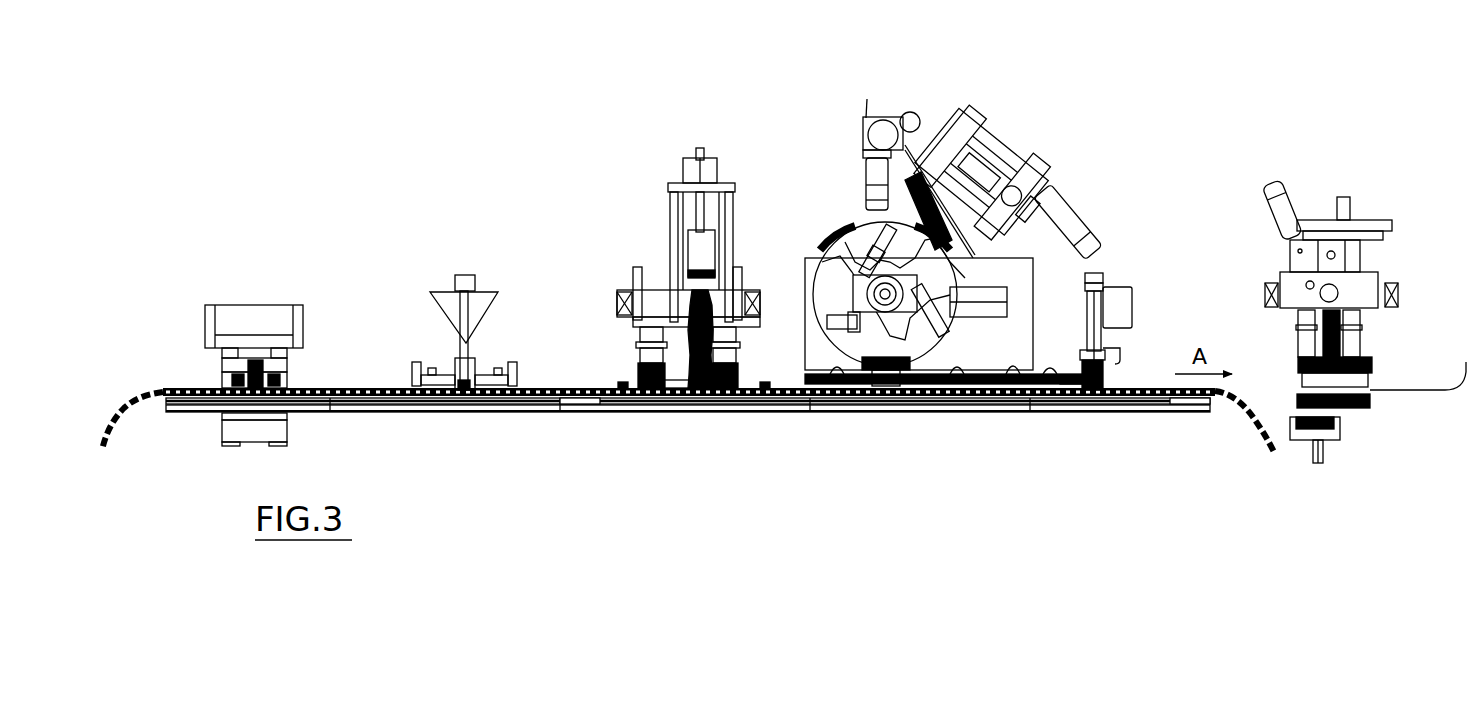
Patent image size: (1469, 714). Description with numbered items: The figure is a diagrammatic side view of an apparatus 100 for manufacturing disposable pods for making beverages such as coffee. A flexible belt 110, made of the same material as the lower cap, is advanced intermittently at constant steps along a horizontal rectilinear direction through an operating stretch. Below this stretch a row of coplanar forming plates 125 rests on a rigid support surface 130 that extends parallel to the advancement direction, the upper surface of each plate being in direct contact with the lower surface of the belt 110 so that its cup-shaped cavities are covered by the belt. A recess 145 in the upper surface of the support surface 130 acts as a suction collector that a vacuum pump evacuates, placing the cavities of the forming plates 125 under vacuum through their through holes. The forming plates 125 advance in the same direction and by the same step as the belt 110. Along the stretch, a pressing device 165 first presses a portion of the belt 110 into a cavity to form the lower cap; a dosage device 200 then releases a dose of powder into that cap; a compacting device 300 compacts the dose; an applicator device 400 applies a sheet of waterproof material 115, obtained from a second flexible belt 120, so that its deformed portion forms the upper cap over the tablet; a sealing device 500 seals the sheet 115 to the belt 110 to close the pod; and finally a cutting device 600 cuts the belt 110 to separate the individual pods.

The apparatus 100 is at (251, 159).
The flexible belt 110 is at (152, 389).
The sheet of waterproof material 115 is at (978, 253).
The second flexible belt 120 is at (868, 110).
The forming plates 125 is at (343, 396).
The rigid support surface 130 is at (533, 413).
The recess 145 is at (413, 410).
The pressing device 165 is at (189, 281).
The dosage device 200 is at (440, 273).
The compacting device 300 is at (659, 134).
The applicator device 400 is at (985, 92).
The sealing device 500 is at (1136, 266).
The cutting device 600 is at (1342, 164).